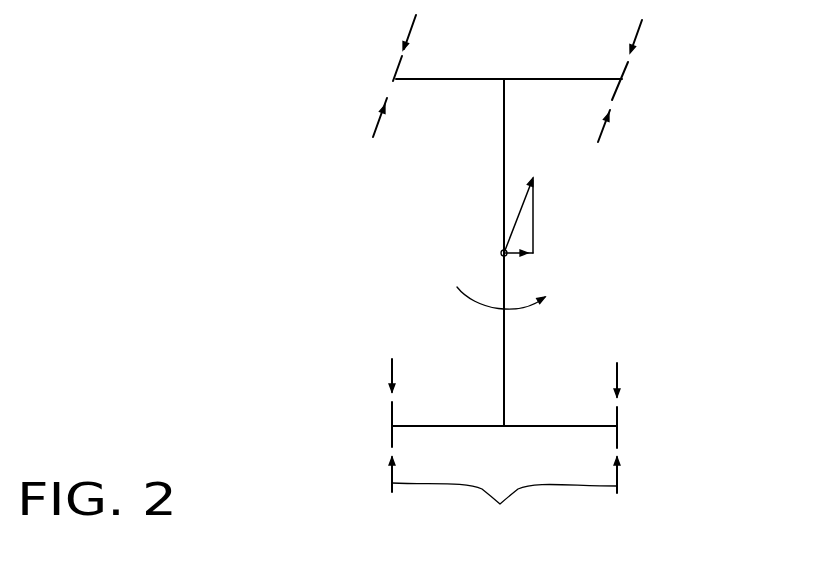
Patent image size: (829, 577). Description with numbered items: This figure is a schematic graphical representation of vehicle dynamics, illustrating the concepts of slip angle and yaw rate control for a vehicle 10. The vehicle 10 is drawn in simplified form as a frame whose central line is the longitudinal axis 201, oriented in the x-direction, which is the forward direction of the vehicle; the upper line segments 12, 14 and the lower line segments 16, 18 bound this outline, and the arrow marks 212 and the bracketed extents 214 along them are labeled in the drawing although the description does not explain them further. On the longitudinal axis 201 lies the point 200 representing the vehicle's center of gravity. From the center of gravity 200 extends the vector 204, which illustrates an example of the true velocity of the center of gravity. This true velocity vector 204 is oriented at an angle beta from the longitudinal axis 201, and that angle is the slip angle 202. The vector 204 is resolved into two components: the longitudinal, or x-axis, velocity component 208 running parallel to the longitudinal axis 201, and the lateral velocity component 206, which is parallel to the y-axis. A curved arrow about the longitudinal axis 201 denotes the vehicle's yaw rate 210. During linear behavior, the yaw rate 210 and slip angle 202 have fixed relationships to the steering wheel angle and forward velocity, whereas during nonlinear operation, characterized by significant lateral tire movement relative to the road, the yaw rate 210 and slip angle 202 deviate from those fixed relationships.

The vehicle 10 is at (643, 264).
The left upper leg segment 12 is at (396, 76).
The right upper leg segment 14 is at (623, 73).
The left lower leg segment 16 is at (390, 412).
The right lower leg segment 18 is at (620, 418).
The center of gravity 200 is at (500, 253).
The longitudinal axis 201 is at (505, 338).
The slip angle 202 is at (511, 197).
The true velocity vector 204 is at (524, 198).
The lateral velocity component 206 is at (519, 257).
The longitudinal velocity component 208 is at (533, 228).
The yaw rate 210 is at (485, 307).
The direction arrows 212 is at (412, 26).
The segment length 214 is at (375, 130).